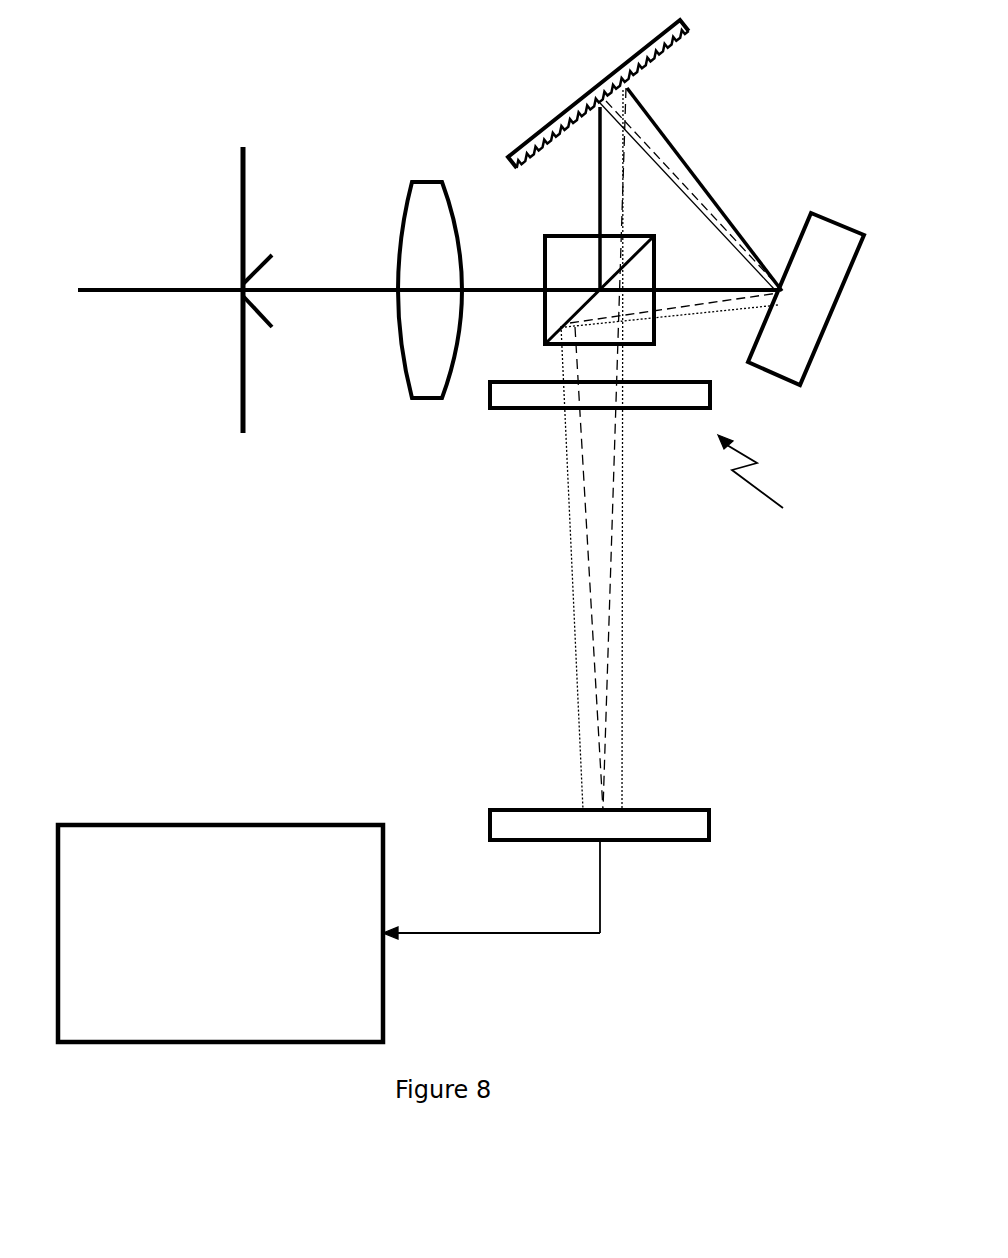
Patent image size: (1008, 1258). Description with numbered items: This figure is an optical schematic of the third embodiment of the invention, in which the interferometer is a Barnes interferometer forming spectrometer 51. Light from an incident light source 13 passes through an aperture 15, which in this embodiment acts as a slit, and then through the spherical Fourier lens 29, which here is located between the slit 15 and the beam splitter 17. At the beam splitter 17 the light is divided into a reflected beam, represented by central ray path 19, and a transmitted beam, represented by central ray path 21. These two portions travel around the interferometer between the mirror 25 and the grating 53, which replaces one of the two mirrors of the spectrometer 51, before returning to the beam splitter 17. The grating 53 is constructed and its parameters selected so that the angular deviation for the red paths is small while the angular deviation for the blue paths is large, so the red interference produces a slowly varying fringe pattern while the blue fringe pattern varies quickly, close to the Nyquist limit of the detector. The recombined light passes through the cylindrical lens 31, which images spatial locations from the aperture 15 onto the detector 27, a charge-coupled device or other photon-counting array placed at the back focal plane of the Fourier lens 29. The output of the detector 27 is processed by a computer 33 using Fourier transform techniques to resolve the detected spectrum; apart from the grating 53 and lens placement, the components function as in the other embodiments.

The incident light source 13 is at (207, 290).
The aperture 15 is at (245, 190).
The beam splitter 17 is at (543, 278).
The central ray path of reflected beam 19 is at (598, 198).
The central ray path of transmitted beam 21 is at (678, 299).
The mirror 25 is at (833, 311).
The detector 27 is at (712, 823).
The spherical (Fourier) lens 29 is at (400, 370).
The cylindrical lens 31 is at (490, 388).
The computer 33 is at (288, 824).
The spectrometer 51 is at (770, 488).
The grating 53 is at (593, 90).